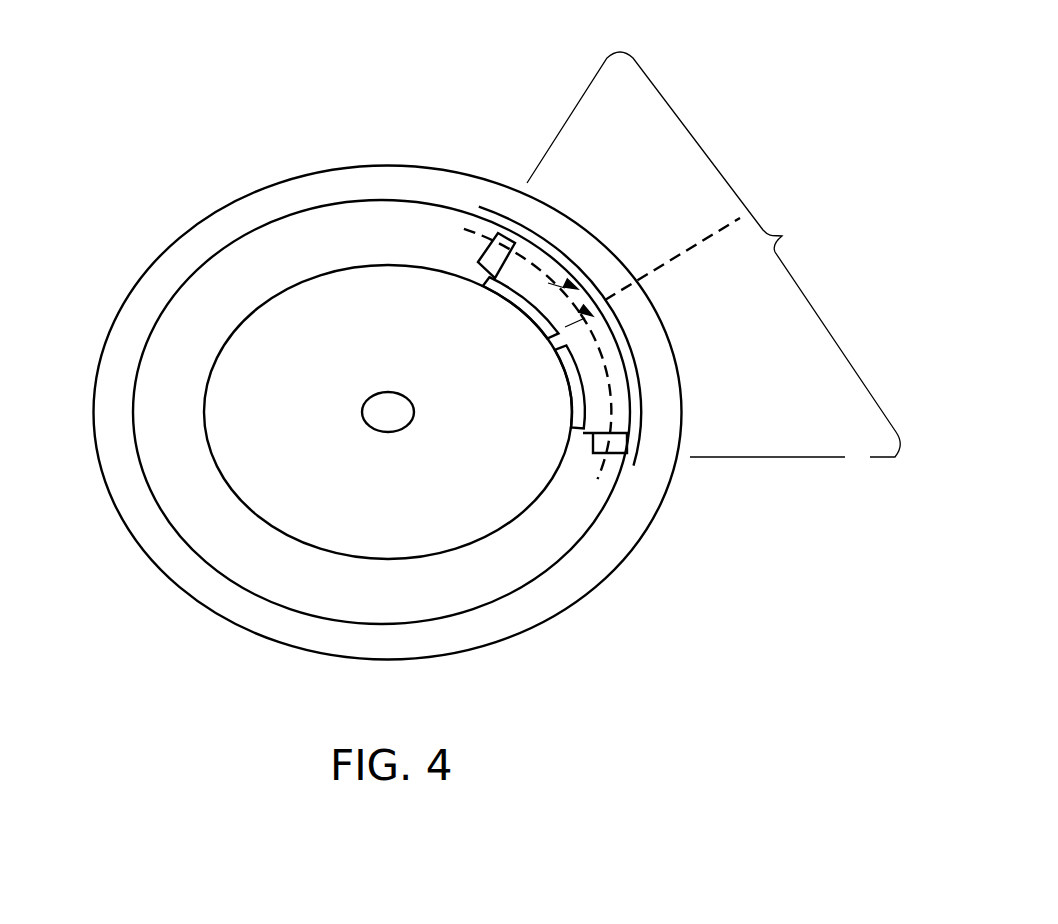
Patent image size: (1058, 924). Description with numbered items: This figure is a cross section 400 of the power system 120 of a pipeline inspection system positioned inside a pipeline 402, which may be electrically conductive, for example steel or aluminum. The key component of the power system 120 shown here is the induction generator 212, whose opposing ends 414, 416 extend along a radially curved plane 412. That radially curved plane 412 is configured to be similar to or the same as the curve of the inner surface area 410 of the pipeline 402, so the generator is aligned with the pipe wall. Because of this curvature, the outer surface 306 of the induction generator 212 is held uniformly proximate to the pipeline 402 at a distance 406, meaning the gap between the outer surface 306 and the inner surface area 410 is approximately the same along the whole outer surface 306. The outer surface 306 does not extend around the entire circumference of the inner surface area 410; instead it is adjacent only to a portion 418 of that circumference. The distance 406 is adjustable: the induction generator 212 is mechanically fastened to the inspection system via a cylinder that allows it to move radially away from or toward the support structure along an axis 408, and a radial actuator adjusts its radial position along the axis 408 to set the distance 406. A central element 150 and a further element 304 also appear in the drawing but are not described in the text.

The cross section 400 is at (155, 73).
The pipeline 402 is at (627, 560).
The power system 120 is at (300, 258).
The inner surface area 410 is at (155, 367).
The central aperture 150 is at (386, 393).
The induction generator 212 is at (447, 250).
The radially curved plane 412 is at (625, 418).
The first position indicator 304 is at (570, 380).
The outer surface 306 is at (619, 322).
The distance 406 is at (603, 297).
The axis 408 is at (724, 237).
The opposing end 414 is at (486, 243).
The opposing end 416 is at (628, 453).
The portion of the circumference 418 is at (713, 254).